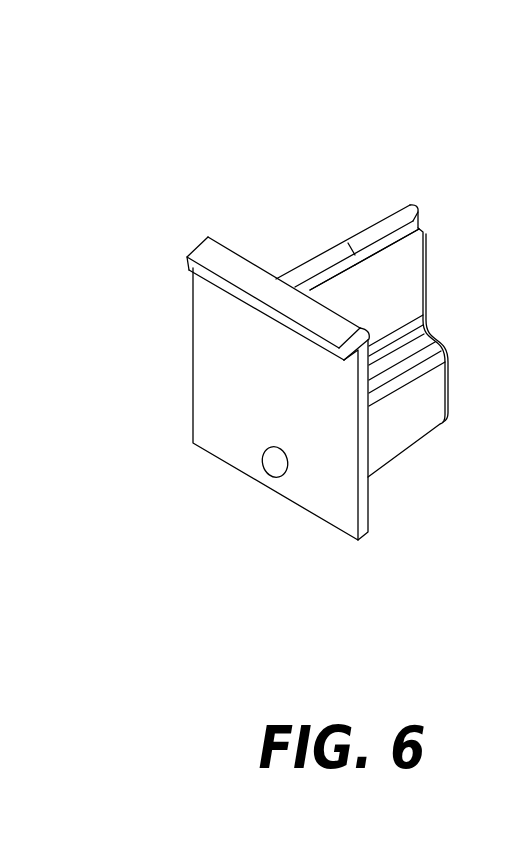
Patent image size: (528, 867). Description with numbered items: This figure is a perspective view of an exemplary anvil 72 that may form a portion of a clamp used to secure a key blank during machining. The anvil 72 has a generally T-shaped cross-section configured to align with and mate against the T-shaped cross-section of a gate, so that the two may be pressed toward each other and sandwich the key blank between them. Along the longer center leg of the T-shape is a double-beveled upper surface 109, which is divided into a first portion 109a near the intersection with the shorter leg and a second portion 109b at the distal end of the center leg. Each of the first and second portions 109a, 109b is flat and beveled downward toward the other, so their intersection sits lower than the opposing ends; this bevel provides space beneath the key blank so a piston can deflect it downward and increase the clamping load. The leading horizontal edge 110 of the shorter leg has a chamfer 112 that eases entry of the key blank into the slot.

The anvil 72 is at (444, 104).
The leading horizontal edge 110 is at (189, 271).
The chamfer 112 is at (198, 248).
The double-beveled upper surface 109 is at (322, 258).
The first portion 109a is at (354, 258).
The second portion 109b is at (403, 240).